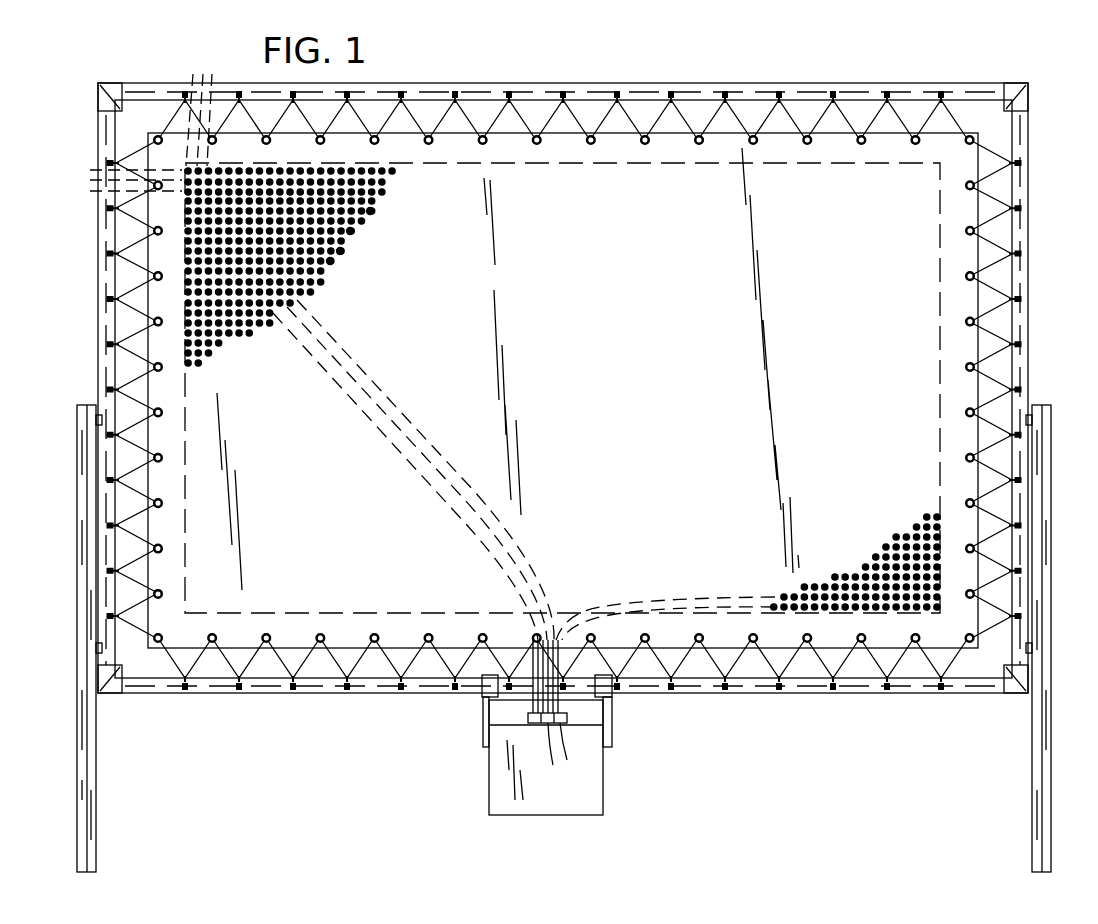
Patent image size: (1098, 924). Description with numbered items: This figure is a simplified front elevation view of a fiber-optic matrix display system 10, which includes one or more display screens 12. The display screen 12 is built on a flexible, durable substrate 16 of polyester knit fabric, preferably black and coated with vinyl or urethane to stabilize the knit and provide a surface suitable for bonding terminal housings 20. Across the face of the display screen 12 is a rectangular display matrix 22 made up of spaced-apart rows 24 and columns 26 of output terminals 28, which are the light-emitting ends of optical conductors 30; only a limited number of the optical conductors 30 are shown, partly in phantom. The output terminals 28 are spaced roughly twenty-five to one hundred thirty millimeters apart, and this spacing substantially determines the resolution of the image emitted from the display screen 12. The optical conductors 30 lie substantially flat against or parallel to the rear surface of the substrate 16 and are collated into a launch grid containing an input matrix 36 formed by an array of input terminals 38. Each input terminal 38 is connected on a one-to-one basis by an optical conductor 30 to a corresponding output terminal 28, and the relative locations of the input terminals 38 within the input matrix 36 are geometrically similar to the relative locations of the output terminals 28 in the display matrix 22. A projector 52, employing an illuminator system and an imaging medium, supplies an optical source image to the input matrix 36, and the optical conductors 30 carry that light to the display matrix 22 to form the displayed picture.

The fiber-optic matrix display system 10 is at (922, 53).
The display screen 12 is at (998, 286).
The substrate 16 is at (630, 369).
The terminal housings 20 is at (330, 268).
The display matrix 22 is at (170, 295).
The rows 24 is at (530, 716).
The columns 26 is at (204, 107).
The output terminals 28 is at (355, 232).
The optical conductors 30 is at (437, 515).
The input matrix 36 is at (528, 737).
The input terminals 38 is at (564, 757).
The projector 52 is at (600, 802).